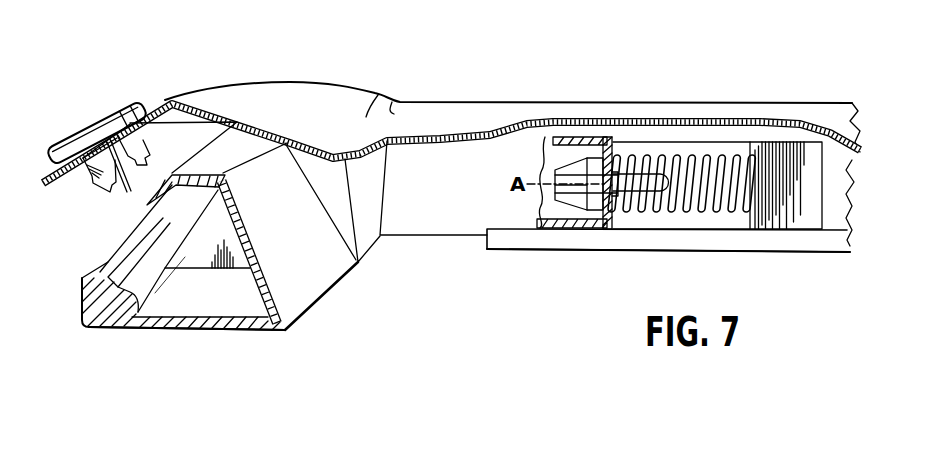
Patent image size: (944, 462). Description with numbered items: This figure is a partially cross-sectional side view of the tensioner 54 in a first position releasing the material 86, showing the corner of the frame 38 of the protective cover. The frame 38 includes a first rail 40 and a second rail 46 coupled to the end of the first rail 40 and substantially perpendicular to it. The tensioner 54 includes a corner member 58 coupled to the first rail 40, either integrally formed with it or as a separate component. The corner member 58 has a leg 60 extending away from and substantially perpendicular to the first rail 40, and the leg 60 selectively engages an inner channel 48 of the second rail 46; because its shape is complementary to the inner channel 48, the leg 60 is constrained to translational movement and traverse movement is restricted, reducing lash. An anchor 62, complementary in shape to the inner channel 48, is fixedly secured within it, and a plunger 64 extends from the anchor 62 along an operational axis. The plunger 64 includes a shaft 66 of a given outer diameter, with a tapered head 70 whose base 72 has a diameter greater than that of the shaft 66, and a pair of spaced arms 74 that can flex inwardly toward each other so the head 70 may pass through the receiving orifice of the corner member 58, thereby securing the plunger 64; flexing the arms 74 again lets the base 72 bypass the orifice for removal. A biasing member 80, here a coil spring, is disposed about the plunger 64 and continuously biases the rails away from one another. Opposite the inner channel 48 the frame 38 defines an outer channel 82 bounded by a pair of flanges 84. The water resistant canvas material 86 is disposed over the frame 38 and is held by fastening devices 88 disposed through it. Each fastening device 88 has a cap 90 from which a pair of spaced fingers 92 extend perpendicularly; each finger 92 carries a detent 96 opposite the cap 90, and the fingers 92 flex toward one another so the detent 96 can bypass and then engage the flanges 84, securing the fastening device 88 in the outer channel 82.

The frame 38 is at (128, 329).
The first rail 40 is at (83, 303).
The second rail 46 is at (665, 240).
The inner channel 48 is at (721, 223).
The tensioner 54 is at (452, 155).
The corner member 58 is at (367, 212).
The leg 60 is at (594, 140).
The anchor 62 is at (815, 204).
The plunger 64 is at (565, 160).
The shaft 66 is at (696, 160).
The head 70 is at (573, 197).
The base 72 is at (587, 208).
The arms 74 is at (595, 170).
The biasing member 80 is at (717, 160).
The outer channel 82 is at (145, 262).
The flanges 84 is at (148, 243).
The material 86 is at (265, 93).
The fastening devices 88 is at (117, 143).
The cap 90 is at (76, 147).
The fingers 92 is at (126, 177).
The detent 96 is at (142, 163).